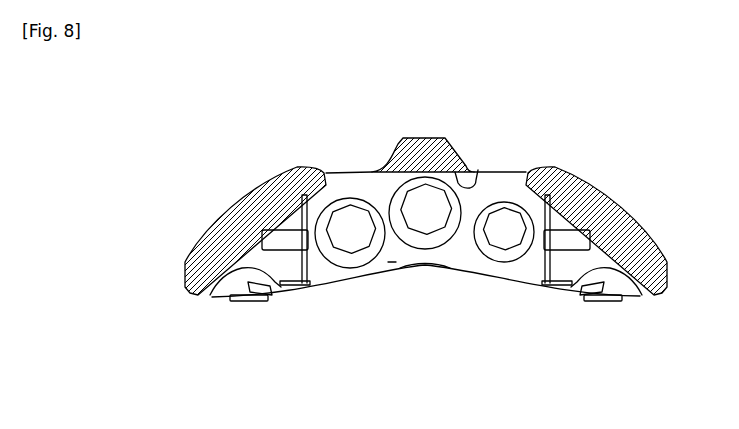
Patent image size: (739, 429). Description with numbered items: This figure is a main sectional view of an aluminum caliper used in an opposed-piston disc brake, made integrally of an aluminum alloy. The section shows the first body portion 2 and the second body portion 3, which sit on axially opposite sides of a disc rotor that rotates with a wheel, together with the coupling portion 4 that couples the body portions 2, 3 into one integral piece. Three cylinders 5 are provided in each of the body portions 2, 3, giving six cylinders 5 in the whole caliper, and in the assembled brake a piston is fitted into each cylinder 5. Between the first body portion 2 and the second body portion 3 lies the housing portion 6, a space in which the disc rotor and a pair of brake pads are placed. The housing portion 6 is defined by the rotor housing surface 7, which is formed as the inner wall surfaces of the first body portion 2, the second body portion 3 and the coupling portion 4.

The first body portion 2 is at (457, 254).
The second body portion 3 is at (426, 264).
The coupling portion 4 is at (226, 220).
The cylinder 5 is at (343, 262).
The housing portion 6 is at (466, 249).
The rotor housing surface 7 is at (477, 170).